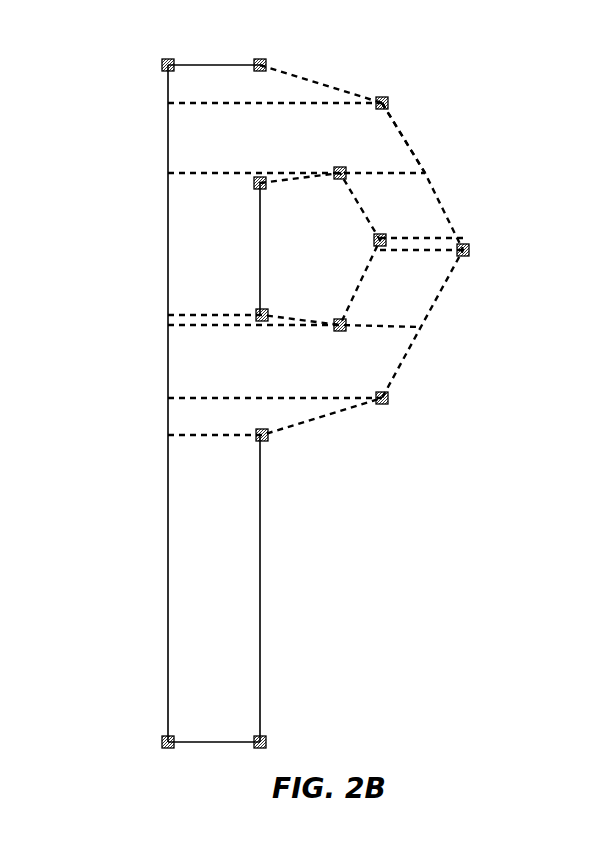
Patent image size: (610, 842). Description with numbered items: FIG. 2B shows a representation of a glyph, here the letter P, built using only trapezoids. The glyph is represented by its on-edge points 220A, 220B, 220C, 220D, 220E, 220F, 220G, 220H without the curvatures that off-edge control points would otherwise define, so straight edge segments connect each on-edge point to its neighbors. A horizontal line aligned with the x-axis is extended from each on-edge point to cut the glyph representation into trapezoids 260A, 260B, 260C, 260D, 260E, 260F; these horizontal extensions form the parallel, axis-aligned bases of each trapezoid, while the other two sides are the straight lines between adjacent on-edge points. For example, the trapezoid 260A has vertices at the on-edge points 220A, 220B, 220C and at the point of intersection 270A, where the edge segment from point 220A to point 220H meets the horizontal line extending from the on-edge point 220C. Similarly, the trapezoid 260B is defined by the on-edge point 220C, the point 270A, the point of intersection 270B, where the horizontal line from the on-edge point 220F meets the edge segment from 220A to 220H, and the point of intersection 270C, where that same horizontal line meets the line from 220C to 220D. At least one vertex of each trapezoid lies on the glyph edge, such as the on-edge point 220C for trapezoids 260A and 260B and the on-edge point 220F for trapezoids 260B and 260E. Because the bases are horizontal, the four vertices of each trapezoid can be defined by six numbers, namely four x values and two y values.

The on-edge point 220A is at (164, 61).
The on-edge point 220B is at (258, 61).
The on-edge point 220C is at (387, 98).
The on-edge point 220D is at (467, 252).
The on-edge point 220E is at (264, 179).
The on-edge point 220F is at (343, 171).
The on-edge point 220G is at (376, 238).
The on-edge point 220H is at (165, 740).
The trapezoid 260A is at (178, 90).
The trapezoid 260B is at (176, 136).
The trapezoid 260C is at (176, 179).
The trapezoid 260D is at (176, 253).
The trapezoid 260E is at (423, 198).
The trapezoid 260F is at (445, 241).
The point of intersection 270A is at (176, 106).
The point of intersection 270B is at (173, 176).
The point of intersection 270C is at (428, 173).